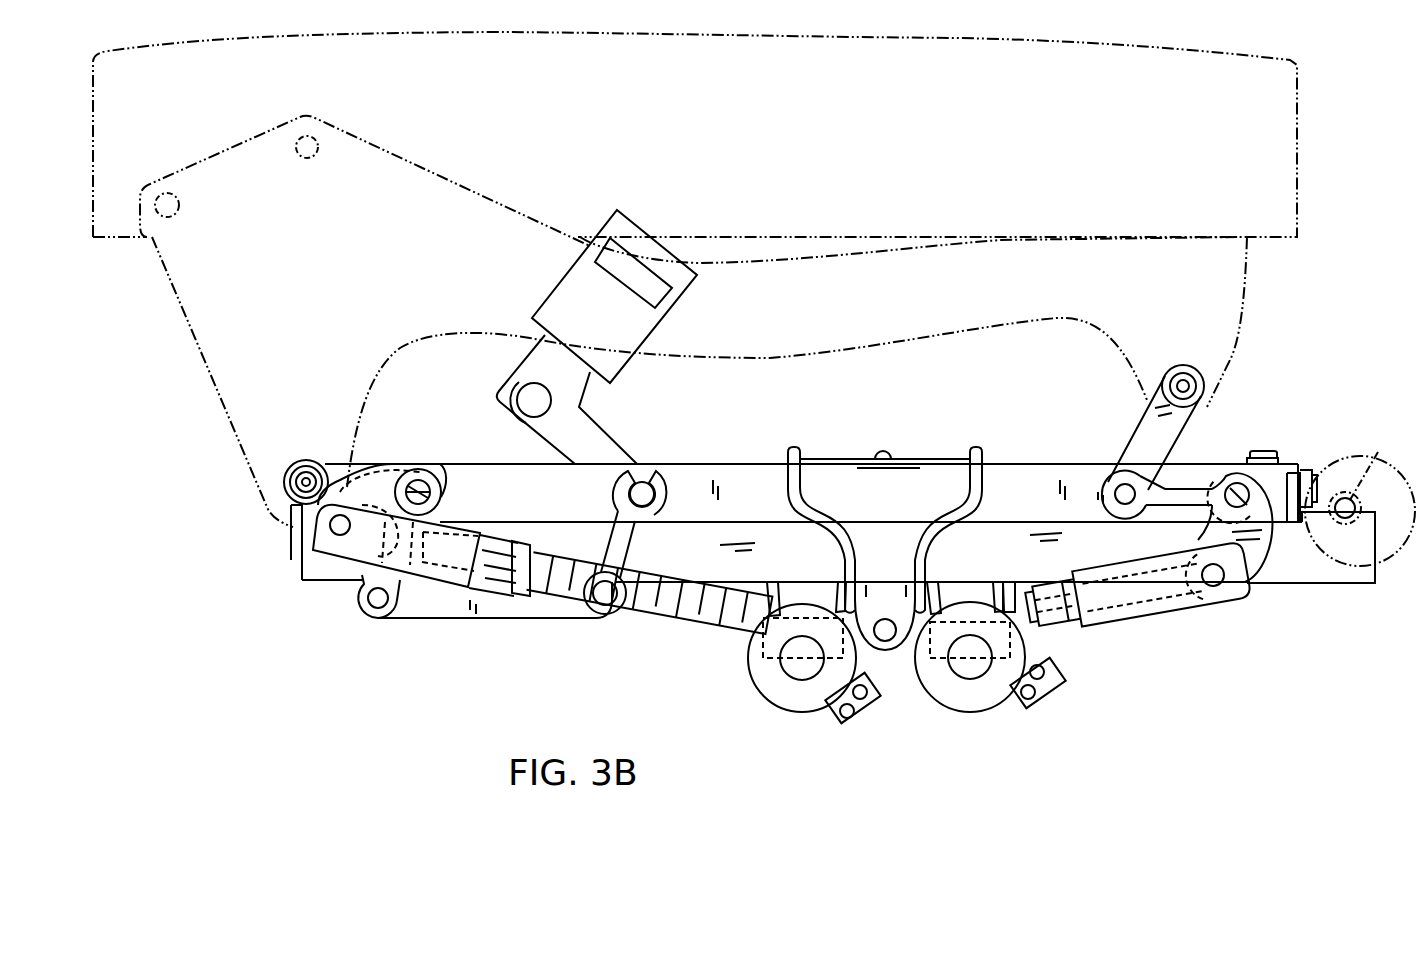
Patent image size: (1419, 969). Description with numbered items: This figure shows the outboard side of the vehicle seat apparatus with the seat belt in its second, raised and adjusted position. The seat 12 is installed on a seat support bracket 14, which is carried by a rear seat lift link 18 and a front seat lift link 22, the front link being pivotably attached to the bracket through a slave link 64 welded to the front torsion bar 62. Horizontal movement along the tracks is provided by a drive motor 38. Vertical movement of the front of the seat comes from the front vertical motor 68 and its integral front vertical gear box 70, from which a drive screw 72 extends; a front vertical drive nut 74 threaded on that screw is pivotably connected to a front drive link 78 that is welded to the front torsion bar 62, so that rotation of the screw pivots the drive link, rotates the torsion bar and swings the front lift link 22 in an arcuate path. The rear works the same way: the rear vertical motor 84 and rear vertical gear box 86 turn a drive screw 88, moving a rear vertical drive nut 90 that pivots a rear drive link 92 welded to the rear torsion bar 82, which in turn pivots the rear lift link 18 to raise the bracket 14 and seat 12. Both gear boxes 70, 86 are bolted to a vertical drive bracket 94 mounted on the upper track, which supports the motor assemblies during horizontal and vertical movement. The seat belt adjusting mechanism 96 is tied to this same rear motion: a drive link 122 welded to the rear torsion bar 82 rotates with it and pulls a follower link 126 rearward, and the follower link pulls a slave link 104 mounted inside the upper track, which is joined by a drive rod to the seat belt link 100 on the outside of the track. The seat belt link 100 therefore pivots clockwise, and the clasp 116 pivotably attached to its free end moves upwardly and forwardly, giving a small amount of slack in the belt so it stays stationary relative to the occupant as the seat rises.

The seat 12 is at (1298, 153).
The seat support bracket 14 is at (1245, 282).
The rear seat lift link 18 is at (335, 470).
The front seat lift link 22 is at (1142, 432).
The drive motor 38 is at (1378, 452).
The front torsion bar 62 is at (1250, 495).
The slave link 64 is at (1190, 490).
The front vertical motor 68 is at (968, 703).
The front vertical gear box 70 is at (985, 600).
The drive screw 72 is at (1038, 628).
The front vertical drive nut 74 is at (1158, 610).
The front drive link 78 is at (1262, 547).
The rear torsion bar 82 is at (428, 492).
The rear vertical motor 84 is at (778, 692).
The rear vertical gear box 86 is at (775, 585).
The drive screw 88 is at (680, 622).
The rear vertical drive nut 90 is at (448, 585).
The rear drive link 92 is at (383, 470).
The vertical drive bracket 94 is at (905, 480).
The seat belt adjusting mechanism 96 is at (425, 688).
The seat belt link 100 is at (603, 428).
The slave link 104 is at (628, 548).
The clasp 116 is at (630, 323).
The drive link 122 is at (357, 600).
The follower link 126 is at (500, 605).